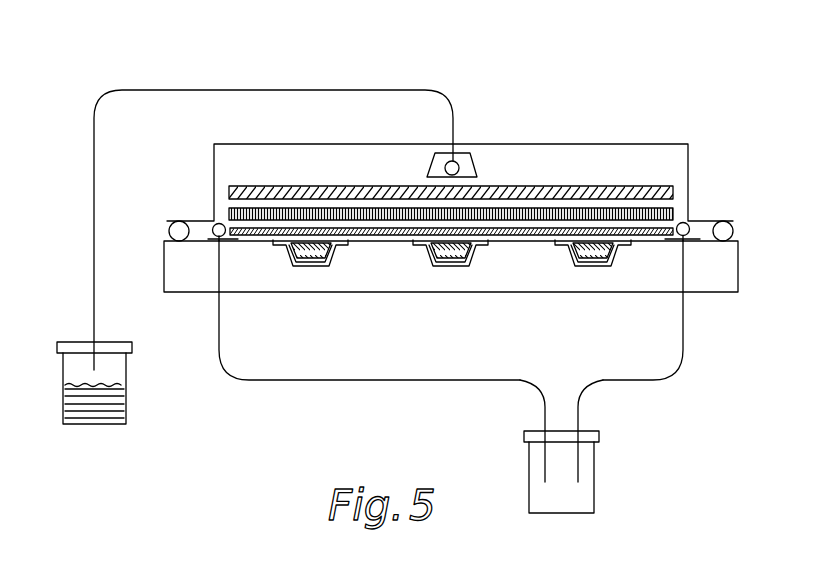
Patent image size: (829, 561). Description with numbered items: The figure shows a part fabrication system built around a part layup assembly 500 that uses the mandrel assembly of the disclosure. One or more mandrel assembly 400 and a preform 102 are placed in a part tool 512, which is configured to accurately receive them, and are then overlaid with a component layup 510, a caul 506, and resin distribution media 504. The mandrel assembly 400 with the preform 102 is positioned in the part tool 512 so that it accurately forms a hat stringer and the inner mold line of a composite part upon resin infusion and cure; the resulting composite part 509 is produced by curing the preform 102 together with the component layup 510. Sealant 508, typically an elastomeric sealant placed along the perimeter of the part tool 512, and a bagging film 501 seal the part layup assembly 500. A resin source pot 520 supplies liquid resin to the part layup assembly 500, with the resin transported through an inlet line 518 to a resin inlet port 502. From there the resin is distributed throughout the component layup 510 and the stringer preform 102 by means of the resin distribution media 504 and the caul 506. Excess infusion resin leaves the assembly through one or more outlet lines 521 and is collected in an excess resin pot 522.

The part layup assembly 500 is at (450, 116).
The bagging film 501 is at (289, 144).
The resin inlet port 502 is at (471, 153).
The resin distribution media 504 is at (632, 187).
The caul 506 is at (675, 213).
The sealant 508 is at (178, 221).
The composite part 509 is at (667, 160).
The component layup 510 is at (647, 236).
The part tool 512 is at (320, 283).
The inlet line 518 is at (92, 300).
The resin source pot 520 is at (95, 415).
The outlet line 521 is at (622, 375).
The excess resin pot 522 is at (585, 497).
The mandrel assembly 400 is at (580, 253).
The preform 102 is at (613, 263).